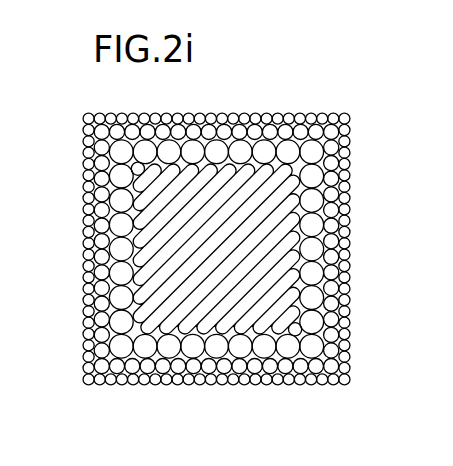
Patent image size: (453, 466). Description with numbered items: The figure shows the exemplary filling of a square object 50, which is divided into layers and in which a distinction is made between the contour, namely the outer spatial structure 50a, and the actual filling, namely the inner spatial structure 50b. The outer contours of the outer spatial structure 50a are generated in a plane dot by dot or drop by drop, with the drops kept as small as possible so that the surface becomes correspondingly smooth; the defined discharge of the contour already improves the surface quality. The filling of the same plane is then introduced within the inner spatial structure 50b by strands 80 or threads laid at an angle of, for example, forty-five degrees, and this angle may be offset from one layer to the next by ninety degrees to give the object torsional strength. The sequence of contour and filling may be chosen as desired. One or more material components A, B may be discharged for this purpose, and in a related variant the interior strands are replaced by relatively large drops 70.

The square object 50 is at (78, 111).
The outer spatial structure 50a is at (348, 328).
The inner spatial structure 50b is at (139, 306).
The relatively large drops 70 is at (313, 220).
The strands 80 is at (283, 292).
The material component A is at (293, 345).
The material component B is at (212, 330).